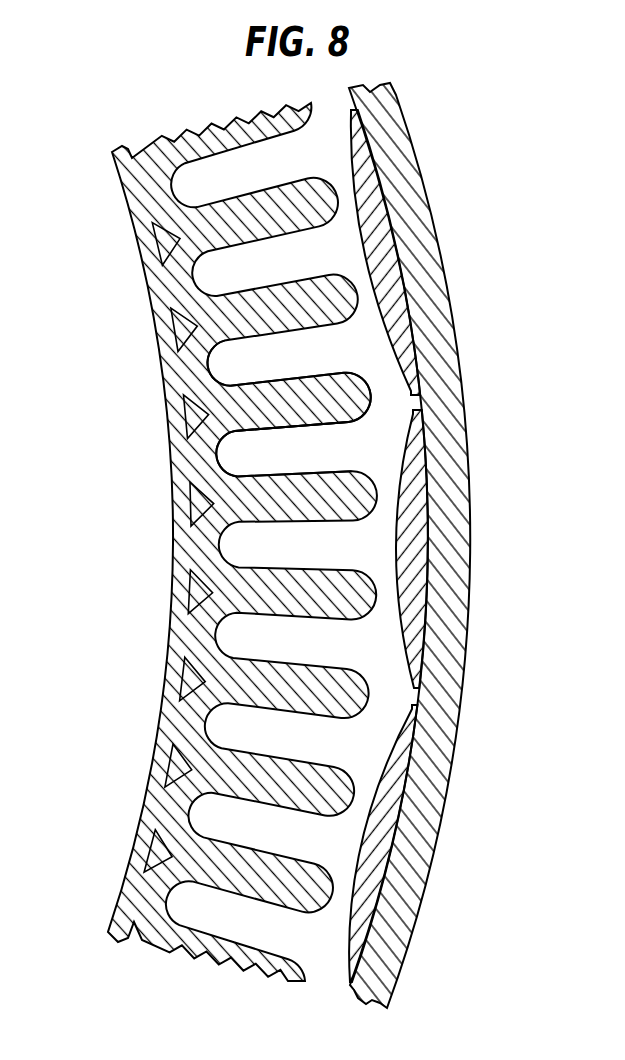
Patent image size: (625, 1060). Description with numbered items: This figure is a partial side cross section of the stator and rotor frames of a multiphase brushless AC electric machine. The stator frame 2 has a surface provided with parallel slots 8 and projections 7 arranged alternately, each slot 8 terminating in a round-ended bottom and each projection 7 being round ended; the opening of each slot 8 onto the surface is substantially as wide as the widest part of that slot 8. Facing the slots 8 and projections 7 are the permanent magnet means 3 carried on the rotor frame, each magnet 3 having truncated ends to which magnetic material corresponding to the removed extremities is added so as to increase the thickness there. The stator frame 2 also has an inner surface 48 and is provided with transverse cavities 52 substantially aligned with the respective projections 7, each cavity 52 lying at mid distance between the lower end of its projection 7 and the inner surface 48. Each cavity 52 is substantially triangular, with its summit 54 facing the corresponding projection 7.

The stator frame 2 is at (205, 542).
The permanent magnet means 3 is at (415, 470).
The projection 7 is at (335, 392).
The slot 8 is at (232, 452).
The inner surface 48 is at (157, 464).
The transverse cavity 52 is at (205, 413).
The summit 54 is at (212, 406).